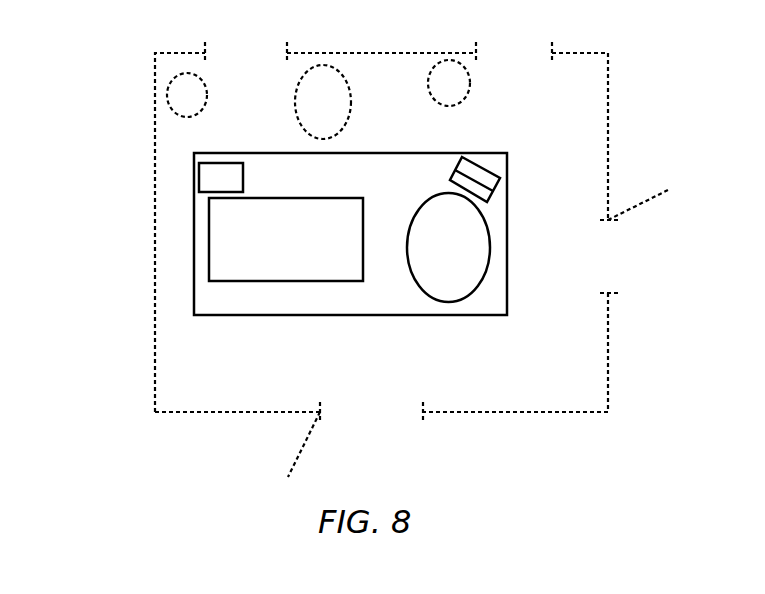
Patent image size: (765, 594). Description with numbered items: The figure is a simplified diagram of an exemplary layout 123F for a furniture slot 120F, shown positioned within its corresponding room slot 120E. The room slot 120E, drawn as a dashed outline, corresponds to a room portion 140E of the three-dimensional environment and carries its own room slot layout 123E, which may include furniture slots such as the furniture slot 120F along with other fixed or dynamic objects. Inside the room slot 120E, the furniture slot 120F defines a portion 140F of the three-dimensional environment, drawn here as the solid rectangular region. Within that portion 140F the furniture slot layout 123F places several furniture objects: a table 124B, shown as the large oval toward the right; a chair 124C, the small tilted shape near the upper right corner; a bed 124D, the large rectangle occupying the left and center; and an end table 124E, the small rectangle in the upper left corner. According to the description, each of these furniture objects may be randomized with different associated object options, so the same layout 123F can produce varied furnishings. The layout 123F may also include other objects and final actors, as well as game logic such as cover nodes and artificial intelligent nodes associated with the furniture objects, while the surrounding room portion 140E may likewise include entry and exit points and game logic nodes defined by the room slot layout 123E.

The room slot 120E is at (372, 52).
The furniture slot 120F is at (176, 140).
The room slot layout 123E is at (155, 280).
The furniture slot layout 123F is at (181, 336).
The table 124B is at (476, 250).
The chair 124C is at (470, 168).
The bed 124D is at (312, 272).
The end table 124E is at (207, 180).
The room portion 140E is at (608, 385).
The furniture slot portion 140F is at (440, 317).